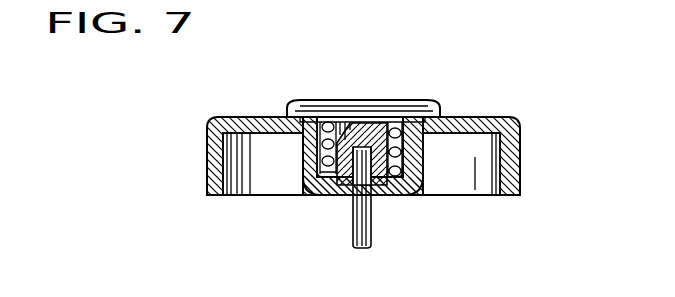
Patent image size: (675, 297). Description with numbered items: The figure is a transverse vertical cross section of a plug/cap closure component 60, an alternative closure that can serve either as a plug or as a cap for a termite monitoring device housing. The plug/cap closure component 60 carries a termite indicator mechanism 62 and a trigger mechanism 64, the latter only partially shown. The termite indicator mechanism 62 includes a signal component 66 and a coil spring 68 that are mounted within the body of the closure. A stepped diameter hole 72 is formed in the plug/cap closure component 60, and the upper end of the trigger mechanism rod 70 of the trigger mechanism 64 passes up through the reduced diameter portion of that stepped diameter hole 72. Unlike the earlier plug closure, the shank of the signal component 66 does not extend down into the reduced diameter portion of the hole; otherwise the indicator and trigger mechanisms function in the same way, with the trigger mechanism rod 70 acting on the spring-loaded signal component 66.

The plug/cap closure component 60 is at (487, 98).
The termite indicator mechanism 62 is at (398, 96).
The trigger mechanism 64 is at (340, 228).
The signal component 66 is at (313, 99).
The coil spring 68 is at (418, 157).
The trigger mechanism rod 70 is at (371, 210).
The stepped diameter hole 72 is at (318, 157).